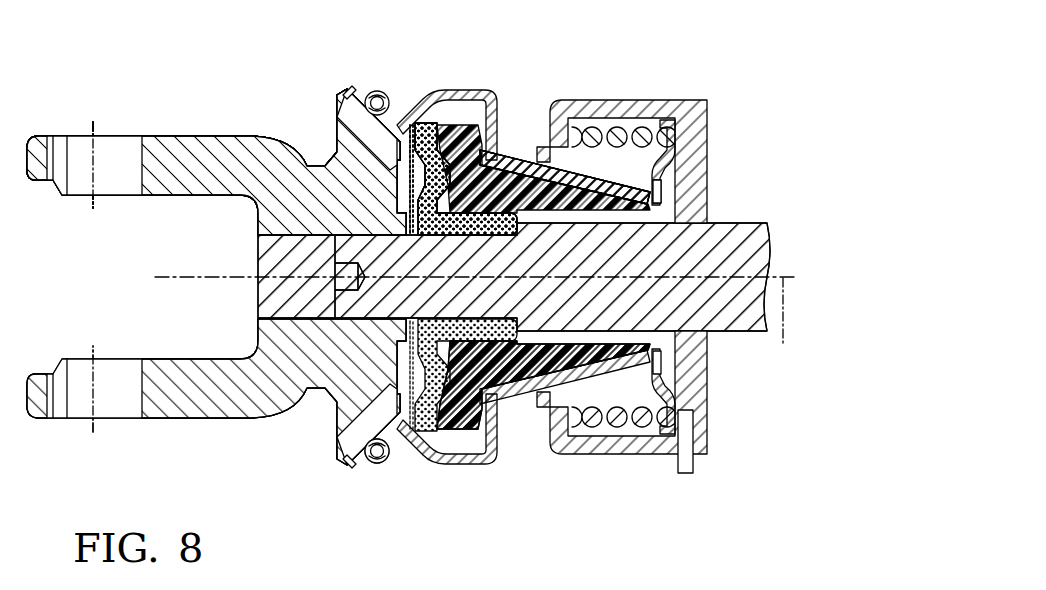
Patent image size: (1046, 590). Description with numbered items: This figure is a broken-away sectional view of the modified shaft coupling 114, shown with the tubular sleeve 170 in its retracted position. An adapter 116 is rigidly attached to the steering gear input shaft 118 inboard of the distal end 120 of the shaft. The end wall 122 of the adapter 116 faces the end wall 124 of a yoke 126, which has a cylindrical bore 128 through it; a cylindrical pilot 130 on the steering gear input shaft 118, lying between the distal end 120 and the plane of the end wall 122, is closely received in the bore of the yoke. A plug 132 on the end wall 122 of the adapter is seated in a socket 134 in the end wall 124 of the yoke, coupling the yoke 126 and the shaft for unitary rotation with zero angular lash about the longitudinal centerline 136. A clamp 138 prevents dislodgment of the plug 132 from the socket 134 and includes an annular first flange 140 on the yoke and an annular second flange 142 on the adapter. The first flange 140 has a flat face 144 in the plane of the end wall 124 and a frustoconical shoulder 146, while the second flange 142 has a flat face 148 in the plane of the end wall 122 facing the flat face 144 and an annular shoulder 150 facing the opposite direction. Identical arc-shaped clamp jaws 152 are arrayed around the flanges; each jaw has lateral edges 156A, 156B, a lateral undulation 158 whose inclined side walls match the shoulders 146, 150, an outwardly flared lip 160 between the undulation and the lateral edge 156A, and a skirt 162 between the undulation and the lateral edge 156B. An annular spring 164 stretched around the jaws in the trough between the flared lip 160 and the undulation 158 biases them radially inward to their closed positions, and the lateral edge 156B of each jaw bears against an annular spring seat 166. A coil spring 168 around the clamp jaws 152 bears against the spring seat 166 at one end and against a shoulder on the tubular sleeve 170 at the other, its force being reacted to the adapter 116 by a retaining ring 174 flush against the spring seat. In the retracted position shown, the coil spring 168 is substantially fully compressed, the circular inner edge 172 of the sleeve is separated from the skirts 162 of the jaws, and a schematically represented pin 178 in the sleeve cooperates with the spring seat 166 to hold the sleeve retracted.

The modified shaft coupling 114 is at (175, 66).
The adapter 116 is at (518, 369).
The steering gear input shaft 118 is at (762, 248).
The distal end 120 is at (335, 256).
The end wall 122 is at (430, 170).
The end wall 124 is at (400, 368).
The yoke 126 is at (182, 126).
The cylindrical bore 128 is at (296, 316).
The cylindrical pilot 130 is at (375, 322).
The plug 132 is at (425, 148).
The socket 134 is at (397, 185).
The longitudinal centerline 136 is at (778, 322).
The clamp 138 is at (509, 91).
The annular first flange 140 is at (337, 95).
The annular second flange 142 is at (497, 98).
The flat face 144 is at (377, 170).
The frustoconical shoulder 146 is at (333, 139).
The flat face 148 is at (443, 342).
The annular shoulder 150 is at (464, 150).
The clamp jaw 152 is at (415, 86).
The lateral edge 156A is at (343, 92).
The lateral edge 156B is at (665, 182).
The lateral undulation 158 is at (471, 116).
The outwardly flared lip 160 is at (358, 92).
The skirt 162 is at (603, 180).
The annular spring 164 is at (378, 465).
The annular spring seat 166 is at (675, 140).
The coil spring 168 is at (593, 130).
The tubular sleeve 170 is at (681, 96).
The circular inner edge 172 is at (555, 160).
The retaining ring 174 is at (662, 193).
The pin 178 is at (695, 470).